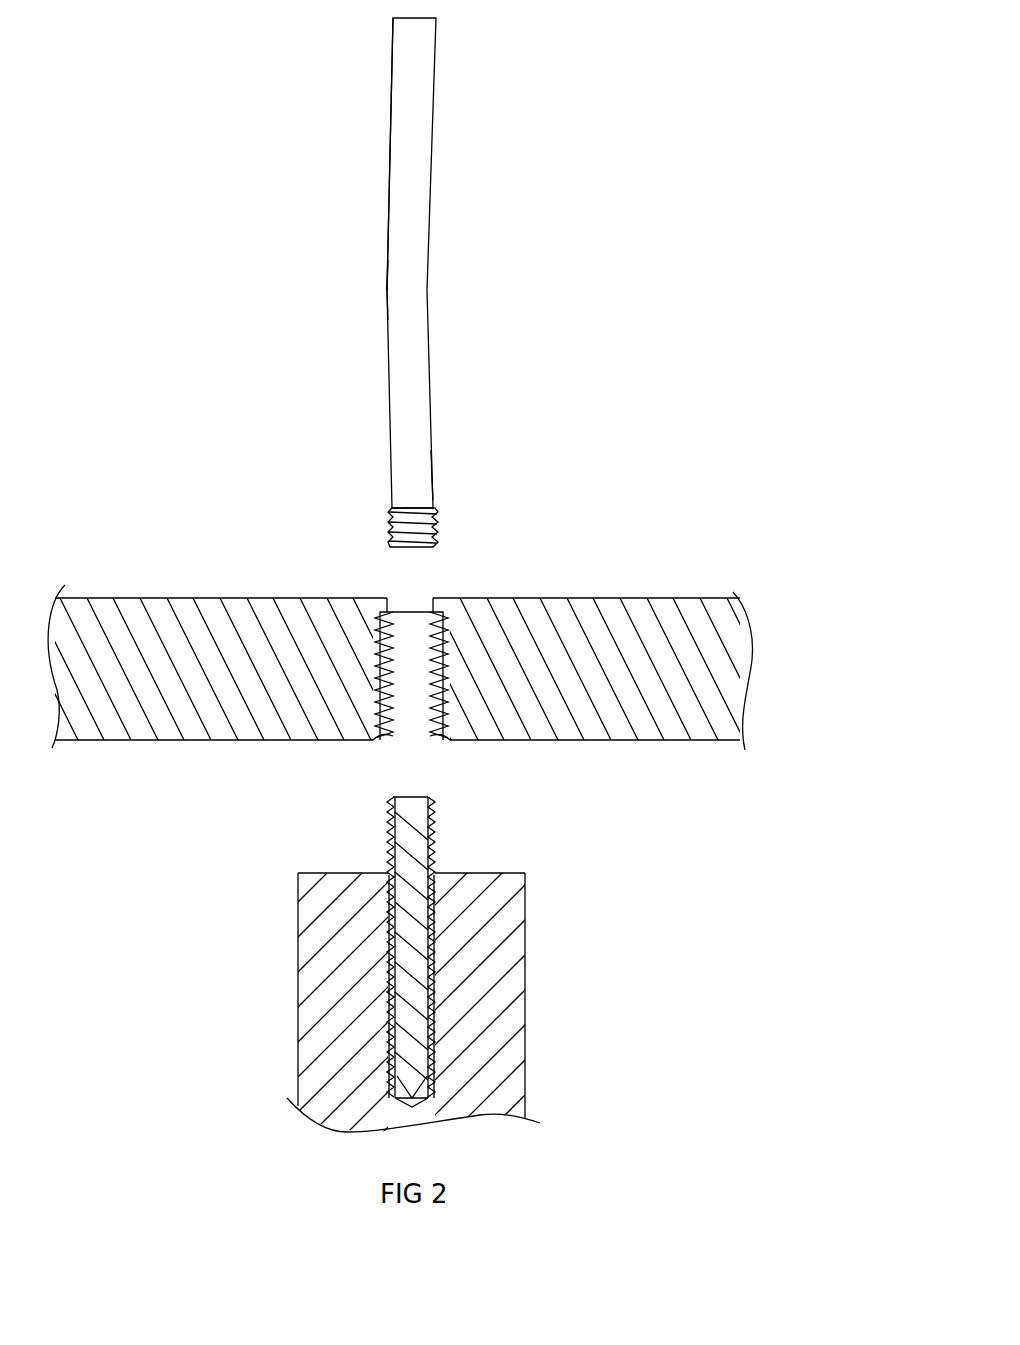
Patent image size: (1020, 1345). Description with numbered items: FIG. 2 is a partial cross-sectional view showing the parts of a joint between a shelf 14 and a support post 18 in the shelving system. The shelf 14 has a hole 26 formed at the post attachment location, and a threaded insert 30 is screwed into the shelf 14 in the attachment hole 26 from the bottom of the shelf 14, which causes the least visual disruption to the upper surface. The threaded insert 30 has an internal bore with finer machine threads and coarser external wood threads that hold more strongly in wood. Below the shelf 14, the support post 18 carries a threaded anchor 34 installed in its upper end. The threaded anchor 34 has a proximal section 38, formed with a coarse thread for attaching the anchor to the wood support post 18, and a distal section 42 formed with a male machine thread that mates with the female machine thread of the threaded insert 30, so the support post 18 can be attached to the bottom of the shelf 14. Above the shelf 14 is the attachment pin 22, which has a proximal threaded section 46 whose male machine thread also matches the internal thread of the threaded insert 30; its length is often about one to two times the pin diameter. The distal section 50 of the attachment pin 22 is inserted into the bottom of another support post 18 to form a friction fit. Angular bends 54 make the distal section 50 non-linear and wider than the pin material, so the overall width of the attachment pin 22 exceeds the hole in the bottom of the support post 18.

The shelf 14 is at (730, 683).
The support post 18 is at (525, 1078).
The attachment pin 22 is at (415, 258).
The hole 26 is at (462, 606).
The threaded insert 30 is at (447, 653).
The threaded anchor 34 is at (330, 875).
The proximal section 38 is at (408, 973).
The distal section 42 is at (423, 825).
The proximal threaded section 46 is at (391, 507).
The distal section 50 is at (397, 233).
The bends 54 is at (385, 283).